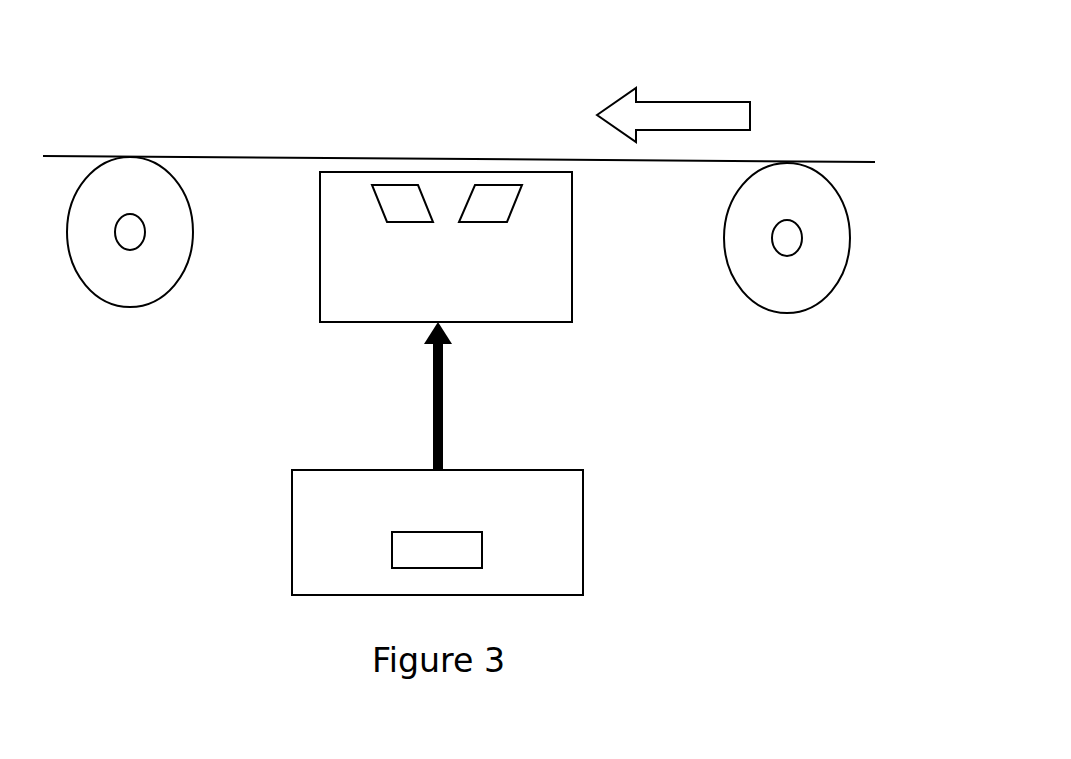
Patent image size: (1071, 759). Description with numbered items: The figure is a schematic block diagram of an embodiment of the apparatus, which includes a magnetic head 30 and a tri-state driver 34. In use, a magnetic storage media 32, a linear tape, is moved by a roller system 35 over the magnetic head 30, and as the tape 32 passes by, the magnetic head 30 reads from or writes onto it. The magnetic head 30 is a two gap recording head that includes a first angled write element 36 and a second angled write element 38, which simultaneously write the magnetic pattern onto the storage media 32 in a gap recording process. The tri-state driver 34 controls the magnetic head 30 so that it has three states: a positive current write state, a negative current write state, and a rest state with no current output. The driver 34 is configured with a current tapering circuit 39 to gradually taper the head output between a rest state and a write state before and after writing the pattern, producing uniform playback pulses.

The magnetic head 30 is at (439, 291).
The magnetic storage media 32 is at (875, 162).
The tri-state driver 34 is at (416, 532).
The roller system 35 is at (830, 288).
The first angled write element 36 is at (377, 207).
The second angled write element 38 is at (517, 205).
The current tapering circuit 39 is at (482, 550).